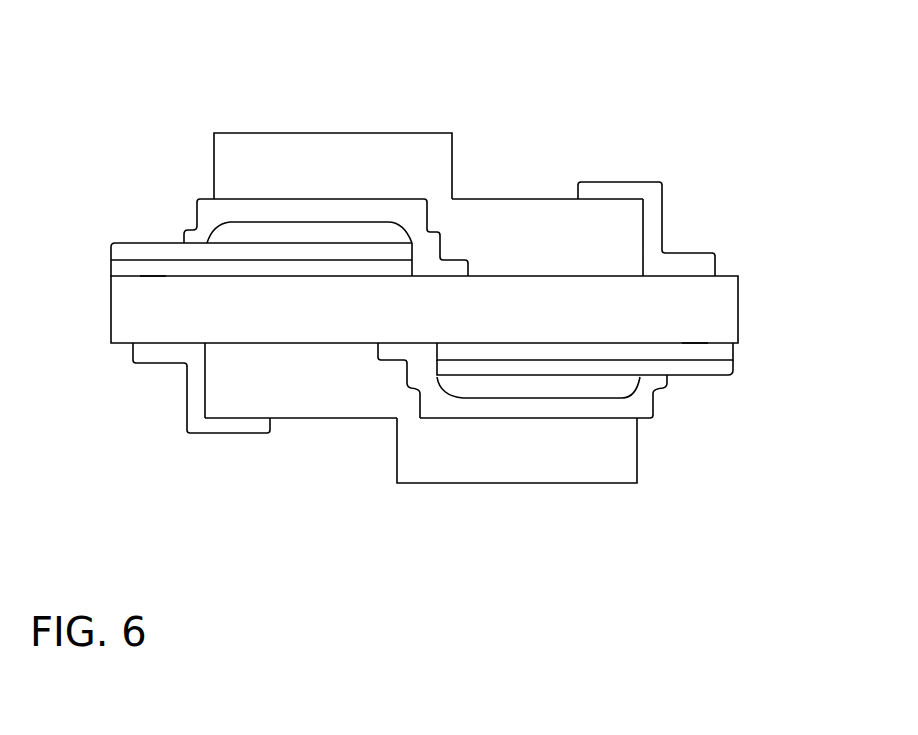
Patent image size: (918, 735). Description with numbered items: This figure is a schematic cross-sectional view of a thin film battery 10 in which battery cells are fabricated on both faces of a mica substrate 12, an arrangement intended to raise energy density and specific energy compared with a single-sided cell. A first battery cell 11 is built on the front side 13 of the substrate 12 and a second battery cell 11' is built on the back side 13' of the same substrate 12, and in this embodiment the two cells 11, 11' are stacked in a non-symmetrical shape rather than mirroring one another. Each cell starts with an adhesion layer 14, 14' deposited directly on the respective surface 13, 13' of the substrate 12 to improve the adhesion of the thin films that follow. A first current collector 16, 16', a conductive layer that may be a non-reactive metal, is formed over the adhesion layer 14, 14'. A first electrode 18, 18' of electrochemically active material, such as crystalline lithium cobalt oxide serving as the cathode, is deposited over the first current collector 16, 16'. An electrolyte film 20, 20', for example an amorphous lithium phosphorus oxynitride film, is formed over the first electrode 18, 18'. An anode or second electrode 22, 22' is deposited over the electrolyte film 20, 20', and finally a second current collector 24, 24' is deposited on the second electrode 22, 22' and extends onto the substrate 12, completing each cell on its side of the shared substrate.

The battery 10 is at (606, 52).
The first battery cell 11 is at (424, 199).
The second battery cell 11' is at (433, 424).
The substrate 12 is at (326, 325).
The front side 13 is at (136, 231).
The back side 13' is at (721, 384).
The adhesion layer 14 is at (231, 268).
The adhesion layer 14' is at (616, 353).
The first current collector 16 is at (246, 248).
The first current collector 16' is at (604, 379).
The first electrode 18 is at (284, 221).
The first electrode 18' is at (573, 402).
The electrolyte film 20 is at (306, 216).
The electrolyte film 20' is at (546, 405).
The second electrode 22 is at (333, 166).
The second electrode 22' is at (517, 450).
The second current collector 24 is at (646, 229).
The second current collector 24' is at (194, 388).